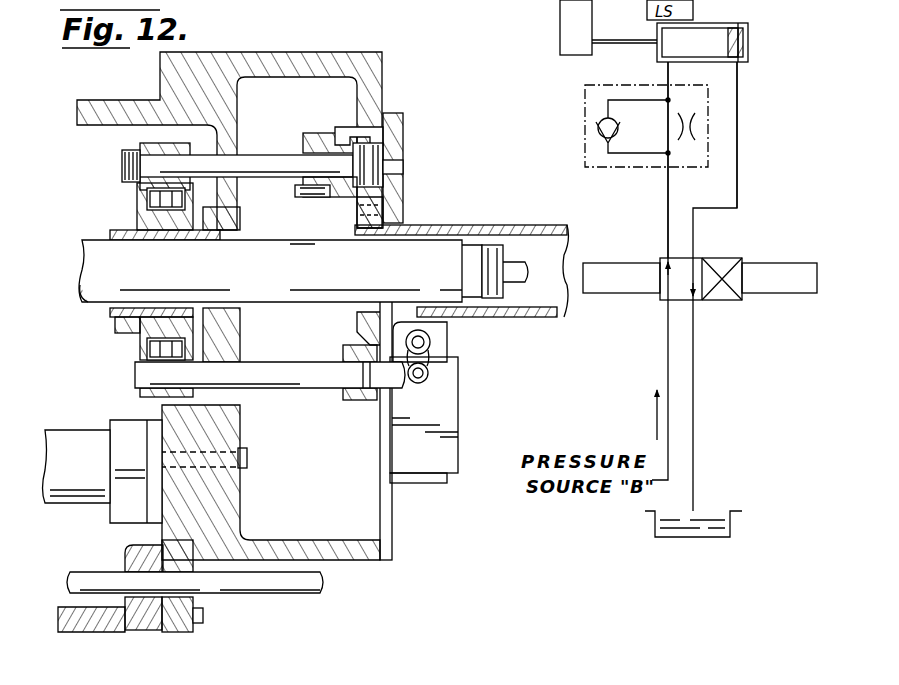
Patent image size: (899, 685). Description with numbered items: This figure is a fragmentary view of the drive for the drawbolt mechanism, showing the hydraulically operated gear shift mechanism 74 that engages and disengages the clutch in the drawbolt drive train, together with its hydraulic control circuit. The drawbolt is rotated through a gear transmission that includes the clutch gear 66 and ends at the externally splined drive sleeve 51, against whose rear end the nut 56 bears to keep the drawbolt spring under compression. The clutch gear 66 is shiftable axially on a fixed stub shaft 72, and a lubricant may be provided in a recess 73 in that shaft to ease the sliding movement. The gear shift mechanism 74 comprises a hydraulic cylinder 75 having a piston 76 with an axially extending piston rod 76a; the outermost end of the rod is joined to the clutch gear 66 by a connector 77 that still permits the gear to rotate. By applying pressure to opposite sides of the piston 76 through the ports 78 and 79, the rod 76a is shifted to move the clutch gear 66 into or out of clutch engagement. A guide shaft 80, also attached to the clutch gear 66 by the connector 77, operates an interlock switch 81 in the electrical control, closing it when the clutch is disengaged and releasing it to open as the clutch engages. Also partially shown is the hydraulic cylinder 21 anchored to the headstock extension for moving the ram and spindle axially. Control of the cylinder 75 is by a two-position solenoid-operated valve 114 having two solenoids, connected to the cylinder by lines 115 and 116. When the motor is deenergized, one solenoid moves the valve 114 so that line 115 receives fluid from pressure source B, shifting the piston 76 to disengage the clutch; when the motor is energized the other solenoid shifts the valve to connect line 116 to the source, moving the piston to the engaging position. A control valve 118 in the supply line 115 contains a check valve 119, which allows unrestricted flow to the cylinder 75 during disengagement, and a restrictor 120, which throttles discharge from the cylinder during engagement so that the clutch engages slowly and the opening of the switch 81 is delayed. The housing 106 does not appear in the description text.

The housing 106 is at (386, 63).
The connector 77 is at (192, 152).
The piston rod 76a is at (125, 164).
The gear shift mechanism 74 is at (322, 133).
The port 78 is at (366, 135).
The port 79 is at (394, 166).
The piston 76 is at (394, 190).
The hydraulic cylinder 75 is at (342, 196).
The clutch gear 66 is at (137, 212).
The stub shaft 72 is at (115, 233).
The recess 73 is at (152, 232).
The drive sleeve 51 is at (88, 278).
The nut 56 is at (503, 297).
The interlock switch 81 is at (428, 362).
The guide shaft 80 is at (299, 390).
The hydraulic cylinder 21 is at (72, 452).
The control valve 118 is at (583, 111).
The check valve 119 is at (598, 136).
The restrictor 120 is at (696, 136).
The line 116 is at (738, 167).
The line 115 is at (667, 226).
The solenoid-operated valve 114 is at (720, 260).